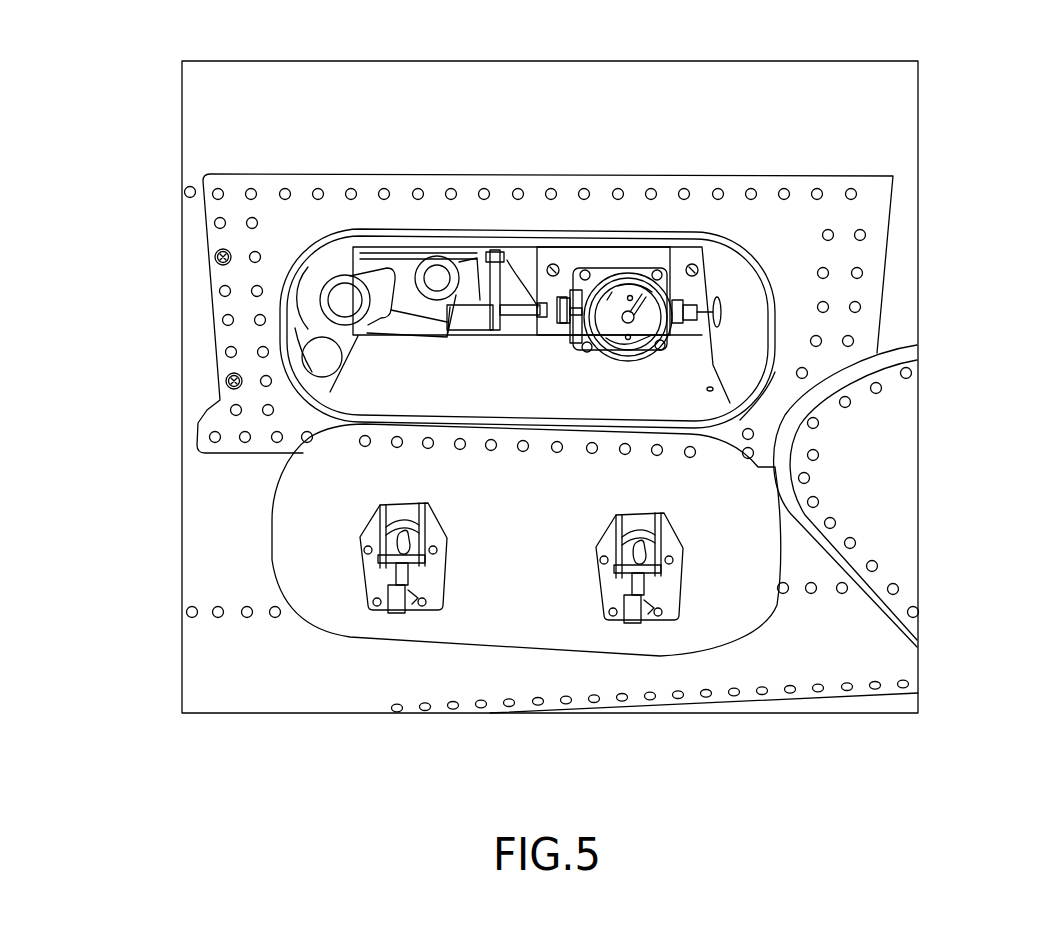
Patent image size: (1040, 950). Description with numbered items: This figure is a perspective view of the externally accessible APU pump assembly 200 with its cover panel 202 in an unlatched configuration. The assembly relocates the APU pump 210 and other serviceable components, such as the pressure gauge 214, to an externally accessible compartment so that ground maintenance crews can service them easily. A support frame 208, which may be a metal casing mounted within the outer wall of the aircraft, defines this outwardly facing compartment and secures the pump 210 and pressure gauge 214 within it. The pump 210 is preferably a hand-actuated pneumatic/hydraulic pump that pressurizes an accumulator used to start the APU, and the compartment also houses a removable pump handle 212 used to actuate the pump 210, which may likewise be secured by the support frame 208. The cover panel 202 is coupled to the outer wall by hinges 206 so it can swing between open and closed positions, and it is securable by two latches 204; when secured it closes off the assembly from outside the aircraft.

The APU pump assembly 200 is at (633, 228).
The cover panel 202 is at (693, 656).
The latches 204 is at (638, 618).
The hinges 206 is at (360, 427).
The support frame 208 is at (518, 385).
The pump 210 is at (420, 267).
The pump handle 212 is at (313, 358).
The pressure gauge 214 is at (655, 352).